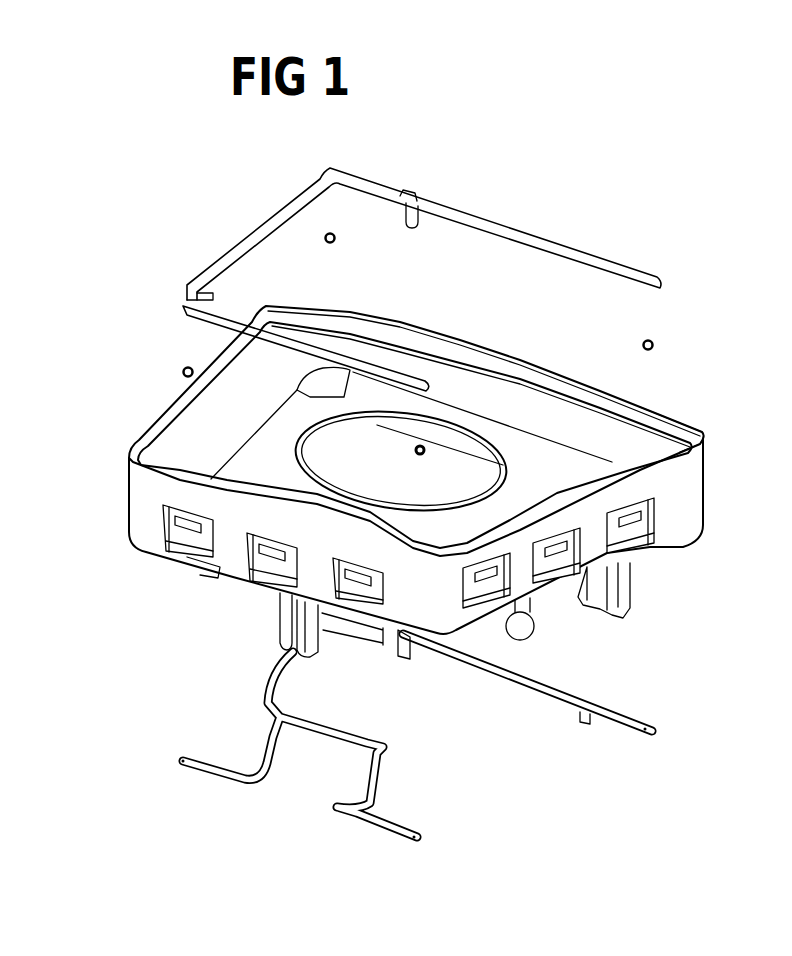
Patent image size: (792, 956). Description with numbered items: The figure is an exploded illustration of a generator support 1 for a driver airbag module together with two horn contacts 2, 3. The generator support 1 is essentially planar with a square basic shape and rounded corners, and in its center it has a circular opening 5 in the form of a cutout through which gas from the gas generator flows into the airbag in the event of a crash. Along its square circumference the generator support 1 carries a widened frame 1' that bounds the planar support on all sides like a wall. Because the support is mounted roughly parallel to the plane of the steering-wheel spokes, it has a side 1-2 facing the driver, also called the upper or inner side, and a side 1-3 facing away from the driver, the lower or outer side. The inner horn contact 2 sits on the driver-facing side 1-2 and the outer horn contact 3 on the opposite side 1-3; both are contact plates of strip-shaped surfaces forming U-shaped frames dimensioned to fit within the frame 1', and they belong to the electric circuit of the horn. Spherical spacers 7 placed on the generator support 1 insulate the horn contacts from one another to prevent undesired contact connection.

The generator support 1 is at (416, 428).
The frame 1' is at (438, 639).
The side facing the driver 1-2 is at (670, 427).
The side facing away from the driver 1-3 is at (548, 581).
The inner horn contact 2 is at (537, 240).
The outer horn contact 3 is at (613, 720).
The circular opening 5 is at (327, 478).
The spherical spacers 7 is at (345, 240).